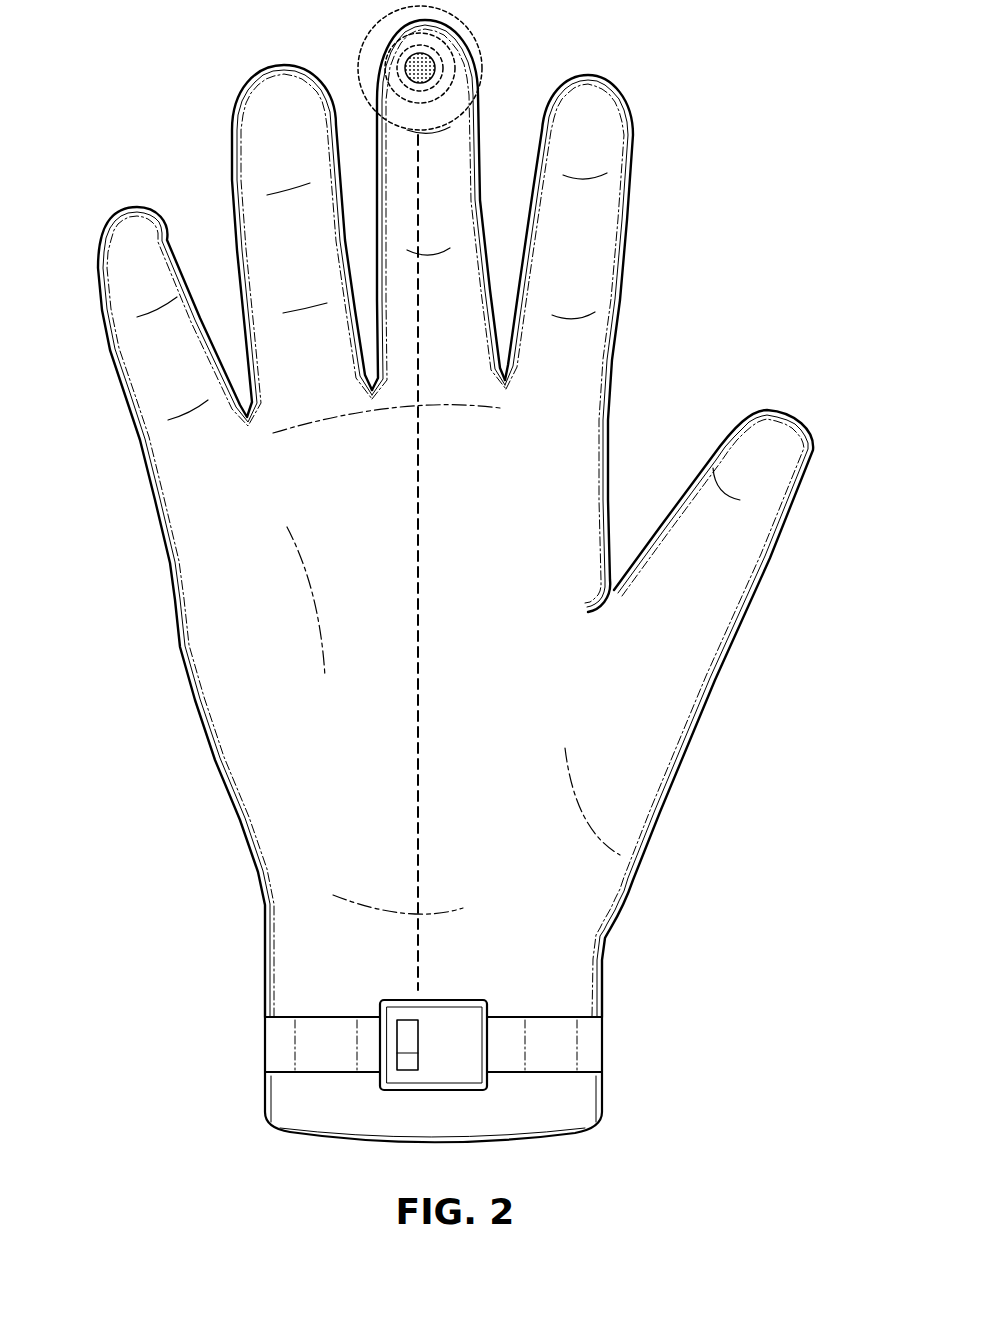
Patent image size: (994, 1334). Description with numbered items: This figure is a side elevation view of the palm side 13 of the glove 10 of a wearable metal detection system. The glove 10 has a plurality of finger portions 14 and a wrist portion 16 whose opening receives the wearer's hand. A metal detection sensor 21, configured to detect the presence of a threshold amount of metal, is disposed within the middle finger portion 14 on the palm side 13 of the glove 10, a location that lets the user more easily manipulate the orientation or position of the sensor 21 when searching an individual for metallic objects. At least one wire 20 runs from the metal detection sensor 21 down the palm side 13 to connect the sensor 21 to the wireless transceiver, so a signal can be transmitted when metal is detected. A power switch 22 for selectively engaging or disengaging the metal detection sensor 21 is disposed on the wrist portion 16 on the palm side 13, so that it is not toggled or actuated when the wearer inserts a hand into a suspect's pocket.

The glove 10 is at (469, 574).
The palm side 13 is at (198, 638).
The finger portions 14 is at (477, 165).
The wrist portion 16 is at (577, 987).
The wire 20 is at (418, 503).
The metal detection sensor 21 is at (435, 62).
The power switch 22 is at (470, 1000).